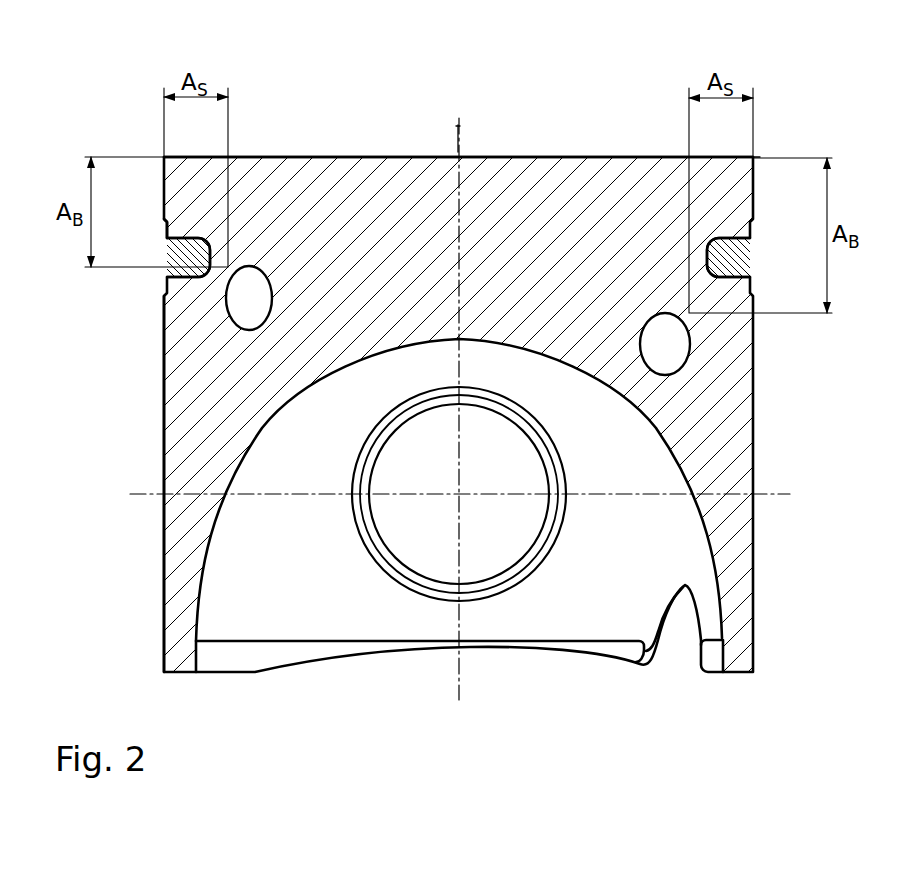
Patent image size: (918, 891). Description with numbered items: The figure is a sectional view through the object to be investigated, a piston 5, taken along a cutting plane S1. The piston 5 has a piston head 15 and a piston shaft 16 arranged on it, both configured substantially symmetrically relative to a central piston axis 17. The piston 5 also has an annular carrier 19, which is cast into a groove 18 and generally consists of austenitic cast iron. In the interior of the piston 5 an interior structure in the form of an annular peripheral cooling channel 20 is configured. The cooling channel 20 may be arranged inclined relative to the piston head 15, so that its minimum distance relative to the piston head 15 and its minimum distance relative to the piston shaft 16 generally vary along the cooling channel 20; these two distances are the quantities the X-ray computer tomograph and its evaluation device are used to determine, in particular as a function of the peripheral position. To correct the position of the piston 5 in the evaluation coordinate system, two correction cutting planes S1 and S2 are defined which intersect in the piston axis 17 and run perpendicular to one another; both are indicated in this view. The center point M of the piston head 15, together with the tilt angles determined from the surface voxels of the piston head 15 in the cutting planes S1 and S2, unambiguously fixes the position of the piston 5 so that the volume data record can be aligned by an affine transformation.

The piston 5 is at (534, 68).
The piston head 15 is at (580, 156).
The piston shaft 16 is at (164, 328).
The central piston axis 17 is at (460, 140).
The groove 18 is at (183, 237).
The annular carrier 19 is at (171, 244).
The cooling channel 20 is at (249, 277).
The center point M is at (458, 156).
The correction cutting plane S1 is at (788, 114).
The correction cutting plane S2 is at (457, 127).